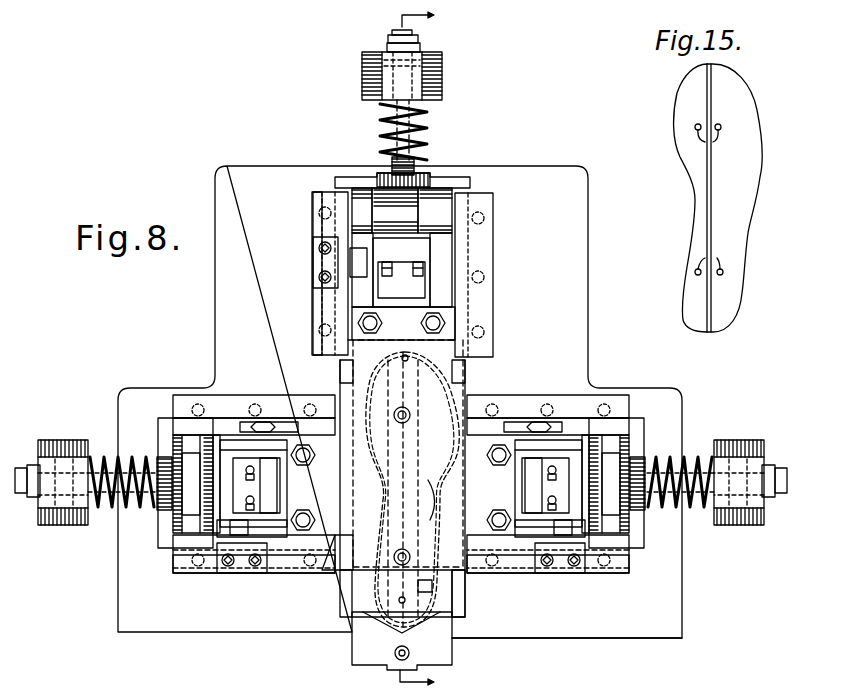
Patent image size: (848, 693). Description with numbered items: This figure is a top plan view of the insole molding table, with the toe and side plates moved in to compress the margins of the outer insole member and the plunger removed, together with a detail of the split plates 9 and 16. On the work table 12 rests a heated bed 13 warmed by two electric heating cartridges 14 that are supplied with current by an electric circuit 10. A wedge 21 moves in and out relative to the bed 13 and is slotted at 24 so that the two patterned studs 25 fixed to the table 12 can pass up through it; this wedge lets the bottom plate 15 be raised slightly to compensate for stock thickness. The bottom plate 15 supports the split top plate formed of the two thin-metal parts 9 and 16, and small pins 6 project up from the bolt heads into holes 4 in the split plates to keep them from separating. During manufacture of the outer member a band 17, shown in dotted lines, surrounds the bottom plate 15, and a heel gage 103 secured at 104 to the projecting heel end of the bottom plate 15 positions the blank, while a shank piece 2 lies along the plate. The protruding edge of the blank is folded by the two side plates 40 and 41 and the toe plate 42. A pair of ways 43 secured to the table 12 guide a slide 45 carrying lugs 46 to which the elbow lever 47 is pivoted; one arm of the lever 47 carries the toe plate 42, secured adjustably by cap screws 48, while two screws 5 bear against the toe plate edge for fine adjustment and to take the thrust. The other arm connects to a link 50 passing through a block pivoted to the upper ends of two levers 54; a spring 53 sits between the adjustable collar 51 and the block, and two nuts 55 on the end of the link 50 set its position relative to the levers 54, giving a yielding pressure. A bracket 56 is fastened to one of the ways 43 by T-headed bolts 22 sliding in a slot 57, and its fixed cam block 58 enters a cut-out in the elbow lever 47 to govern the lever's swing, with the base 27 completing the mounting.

In FIG. 8, the shank piece 2 is at (436, 505).
In FIG. 15, the holes 4 is at (712, 143).
In FIG. 8, the screws 5 is at (418, 255).
In FIG. 8, the small pins 6 is at (410, 424).
In FIG. 8, the split top plate part 9 is at (386, 535).
In FIG. 15, the split top plate part 9 is at (677, 122).
In FIG. 8, the electric circuit 10 is at (298, 400).
In FIG. 8, the work table 12 is at (590, 250).
In FIG. 8, the heated bed 13 is at (462, 605).
In FIG. 8, the electric heating cartridges 14 is at (340, 462).
In FIG. 8, the bottom plate 15 is at (386, 492).
In FIG. 8, the split top plate part 16 is at (455, 420).
In FIG. 15, the split top plate part 16 is at (756, 115).
In FIG. 8, the band 17 is at (383, 467).
In FIG. 8, the wedge 21 is at (458, 372).
In FIG. 8, the T-headed bolts 22 is at (315, 278).
In FIG. 8, the slot 24 is at (412, 342).
In FIG. 8, the patterned studs 25 is at (412, 330).
In FIG. 8, the base 27 is at (482, 676).
In FIG. 8, the side plate 40 is at (455, 576).
In FIG. 8, the side plate 41 is at (360, 558).
In FIG. 8, the toe plate 42 is at (353, 362).
In FIG. 8, the ways 43 is at (312, 205).
In FIG. 8, the slide 45 is at (470, 185).
In FIG. 8, the lugs 46 is at (362, 190).
In FIG. 8, the elbow lever 47 is at (430, 266).
In FIG. 8, the cap screws 48 is at (358, 323).
In FIG. 8, the link 50 is at (430, 118).
In FIG. 8, the adjustable collar 51 is at (425, 178).
In FIG. 8, the spring 53 is at (385, 128).
In FIG. 8, the levers 54 is at (372, 77).
In FIG. 8, the nuts 55 is at (390, 48).
In FIG. 8, the bracket 56 is at (313, 245).
In FIG. 8, the slot 57 is at (323, 196).
In FIG. 8, the fixed cam block 58 is at (390, 255).
In FIG. 8, the heel gage 103 is at (380, 637).
In FIG. 8, the securing point 104 is at (420, 655).